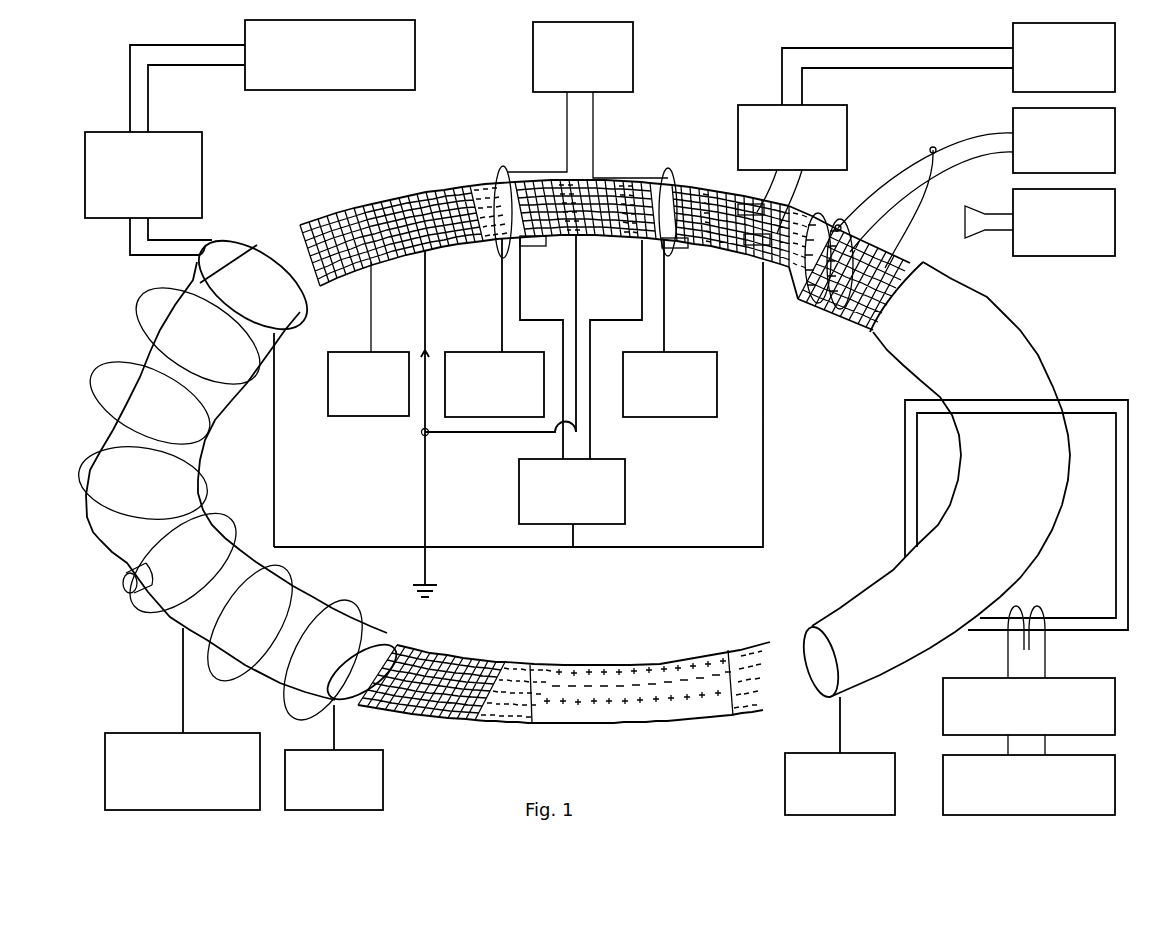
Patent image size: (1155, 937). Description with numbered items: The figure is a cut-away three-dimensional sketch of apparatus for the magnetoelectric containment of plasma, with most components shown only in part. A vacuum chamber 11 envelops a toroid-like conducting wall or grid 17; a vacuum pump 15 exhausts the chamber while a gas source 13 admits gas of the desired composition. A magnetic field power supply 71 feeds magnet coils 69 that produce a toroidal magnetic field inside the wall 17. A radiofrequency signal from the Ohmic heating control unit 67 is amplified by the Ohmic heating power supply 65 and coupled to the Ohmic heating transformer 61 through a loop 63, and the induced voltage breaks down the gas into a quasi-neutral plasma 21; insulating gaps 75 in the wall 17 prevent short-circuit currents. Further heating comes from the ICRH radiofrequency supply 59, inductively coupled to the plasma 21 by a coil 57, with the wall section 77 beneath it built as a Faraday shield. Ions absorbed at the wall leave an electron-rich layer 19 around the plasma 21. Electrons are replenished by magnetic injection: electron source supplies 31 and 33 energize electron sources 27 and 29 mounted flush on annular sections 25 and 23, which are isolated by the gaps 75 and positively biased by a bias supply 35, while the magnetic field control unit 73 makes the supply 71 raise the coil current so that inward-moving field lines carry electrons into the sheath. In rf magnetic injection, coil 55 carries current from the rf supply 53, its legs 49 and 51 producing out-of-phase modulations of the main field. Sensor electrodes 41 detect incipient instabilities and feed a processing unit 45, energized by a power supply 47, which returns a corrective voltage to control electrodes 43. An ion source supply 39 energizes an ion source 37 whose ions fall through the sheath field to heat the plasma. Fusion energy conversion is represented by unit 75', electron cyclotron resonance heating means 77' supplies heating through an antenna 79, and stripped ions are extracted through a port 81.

The vacuum chamber 11 is at (390, 612).
The gas source 13 is at (383, 785).
The vacuum pump 15 is at (785, 800).
The conducting wall 17 is at (385, 202).
The electron-rich layer 19 is at (497, 655).
The plasma 21 is at (645, 670).
The annular section 23 is at (650, 245).
The annular section 25 is at (495, 188).
The electron source 27 is at (543, 250).
The electron source 29 is at (683, 250).
The electron source supply 31 is at (475, 352).
The electron source supply 33 is at (683, 417).
The bias supply 35 is at (625, 492).
The ion source 37 is at (386, 262).
The ion source supply 39 is at (370, 417).
The sensor electrodes 41 is at (760, 208).
The control electrodes 43 is at (745, 265).
The processing unit 45 is at (847, 133).
The power supply 47 is at (1013, 38).
The leg 49 is at (510, 170).
The leg 51 is at (668, 170).
The rf supply 53 is at (633, 58).
The coil 55 is at (650, 175).
The coil 57 is at (990, 132).
The ICRH radiofrequency supply 59 is at (1115, 143).
The Ohmic heating transformer 61 is at (1080, 400).
The loop 63 is at (1048, 668).
The Ohmic heating power supply 65 is at (943, 715).
The Ohmic heating control unit 67 is at (965, 815).
The magnet coils 69 is at (240, 685).
The magnetic field power supply 71 is at (202, 178).
The magnetic field control unit 73 is at (415, 58).
The insulating gaps 75 is at (631, 446).
The energy conversion unit 75' is at (157, 719).
The section 77 is at (829, 277).
The electron cyclotron resonance heating means 77' is at (1064, 241).
The antenna 79 is at (990, 235).
The port 81 is at (122, 590).